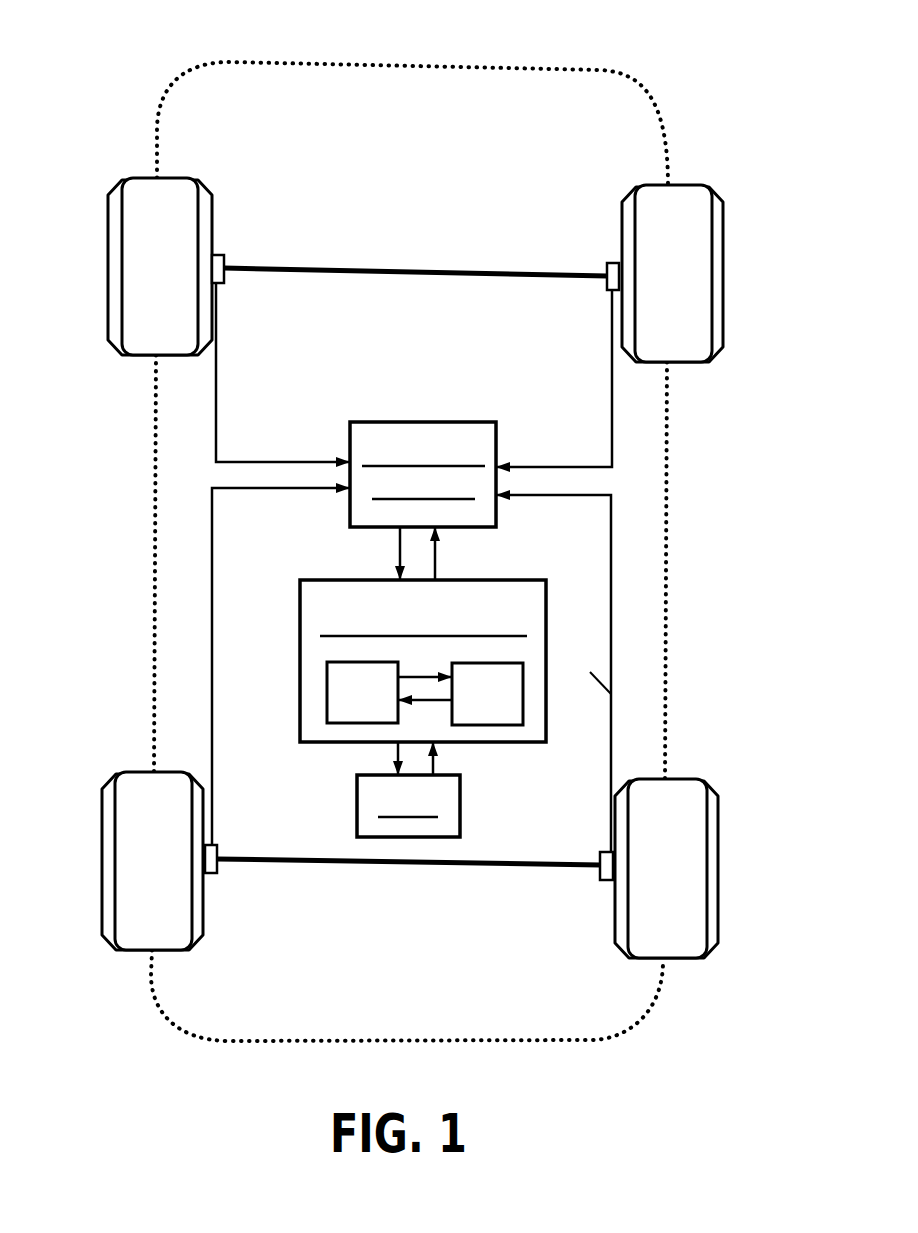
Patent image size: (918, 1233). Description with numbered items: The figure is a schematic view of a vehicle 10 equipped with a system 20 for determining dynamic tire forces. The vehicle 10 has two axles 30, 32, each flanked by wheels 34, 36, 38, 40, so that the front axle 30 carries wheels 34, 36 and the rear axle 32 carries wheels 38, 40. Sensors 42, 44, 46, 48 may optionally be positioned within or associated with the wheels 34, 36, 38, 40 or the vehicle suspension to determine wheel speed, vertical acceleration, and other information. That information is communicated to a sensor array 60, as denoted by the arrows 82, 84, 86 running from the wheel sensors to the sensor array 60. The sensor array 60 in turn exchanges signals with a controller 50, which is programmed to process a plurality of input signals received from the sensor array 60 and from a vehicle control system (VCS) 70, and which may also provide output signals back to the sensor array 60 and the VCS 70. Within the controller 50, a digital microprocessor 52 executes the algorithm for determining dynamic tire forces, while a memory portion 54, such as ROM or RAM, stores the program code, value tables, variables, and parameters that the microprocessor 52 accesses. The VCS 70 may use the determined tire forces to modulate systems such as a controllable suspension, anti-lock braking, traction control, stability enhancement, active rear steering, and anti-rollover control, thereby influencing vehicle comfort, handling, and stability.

The vehicle 10 is at (699, 88).
The system 20 is at (249, 537).
The axle 30 is at (372, 268).
The axle 32 is at (312, 865).
The wheel 34 is at (137, 195).
The wheel 36 is at (697, 200).
The wheel 38 is at (132, 783).
The wheel 40 is at (698, 790).
The sensor 42 is at (225, 254).
The sensor 44 is at (605, 262).
The sensor 46 is at (217, 873).
The sensor 48 is at (600, 880).
The controller 50 is at (399, 692).
The digital microprocessor 52 is at (380, 708).
The memory portion 54 is at (505, 709).
The sensor array 60 is at (430, 420).
The vehicle control system (VCS) 70 is at (462, 796).
The arrow 82 is at (217, 386).
The arrow 84 is at (610, 393).
The arrow 86 is at (212, 687).